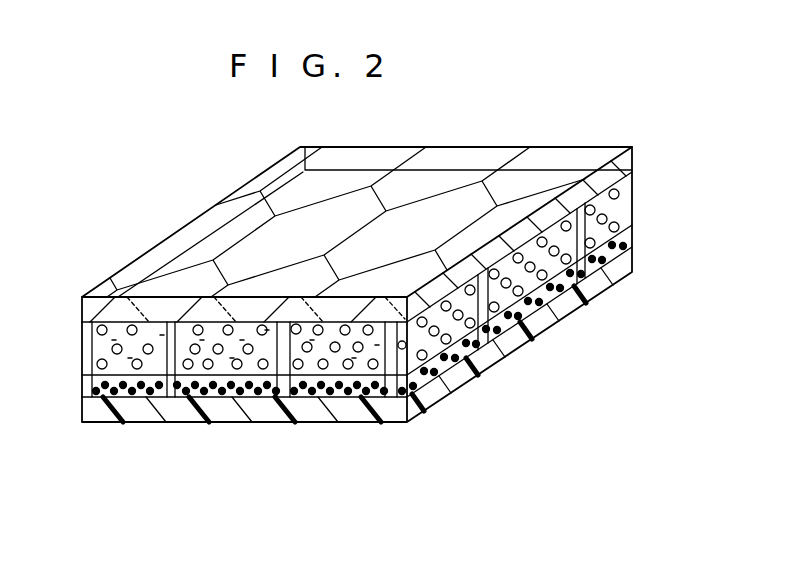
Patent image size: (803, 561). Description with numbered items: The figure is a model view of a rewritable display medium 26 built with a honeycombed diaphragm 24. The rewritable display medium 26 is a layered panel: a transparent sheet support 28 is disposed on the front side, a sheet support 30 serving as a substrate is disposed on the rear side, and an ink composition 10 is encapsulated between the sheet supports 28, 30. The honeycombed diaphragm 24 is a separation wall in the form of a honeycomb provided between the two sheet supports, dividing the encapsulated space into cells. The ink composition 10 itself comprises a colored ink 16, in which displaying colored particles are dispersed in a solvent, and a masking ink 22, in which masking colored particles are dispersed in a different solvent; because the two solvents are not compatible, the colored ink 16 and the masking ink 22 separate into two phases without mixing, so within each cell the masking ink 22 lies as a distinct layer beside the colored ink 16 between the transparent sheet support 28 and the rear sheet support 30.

The rewritable display medium 26 is at (595, 113).
The transparent sheet support 28 is at (175, 289).
The ink composition 10 is at (357, 352).
The masking ink 22 is at (226, 357).
The colored ink 16 is at (305, 397).
The sheet support 30 is at (137, 407).
The honeycombed diaphragm 24 is at (590, 293).